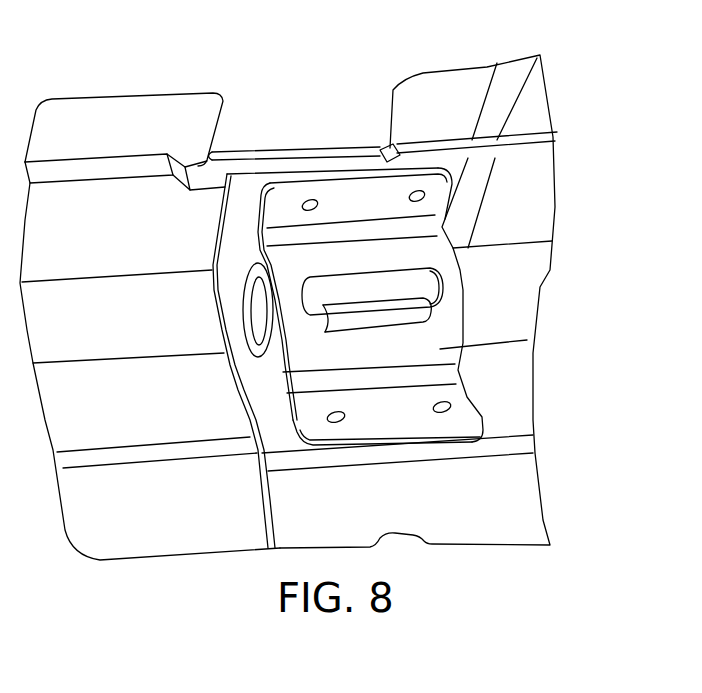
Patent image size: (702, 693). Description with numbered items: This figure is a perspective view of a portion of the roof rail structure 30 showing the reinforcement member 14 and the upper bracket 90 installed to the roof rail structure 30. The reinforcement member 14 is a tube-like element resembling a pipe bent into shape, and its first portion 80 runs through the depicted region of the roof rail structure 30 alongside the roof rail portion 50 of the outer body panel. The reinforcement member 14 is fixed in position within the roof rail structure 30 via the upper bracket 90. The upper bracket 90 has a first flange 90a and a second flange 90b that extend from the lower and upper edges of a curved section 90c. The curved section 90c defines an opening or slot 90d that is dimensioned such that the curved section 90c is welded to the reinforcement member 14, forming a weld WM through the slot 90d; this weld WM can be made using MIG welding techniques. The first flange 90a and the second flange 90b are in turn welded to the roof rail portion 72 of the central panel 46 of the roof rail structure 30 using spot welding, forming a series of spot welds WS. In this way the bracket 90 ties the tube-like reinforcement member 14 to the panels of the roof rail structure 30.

The roof rail portion 50 is at (98, 90).
The roof rail structure 30 is at (196, 55).
The reinforcement member 14 is at (520, 270).
The first portion 80 is at (488, 267).
The roof rail portion 72 is at (383, 155).
The central panel 46 is at (383, 147).
The upper bracket 90 is at (435, 350).
The first flange 90a is at (463, 417).
The second flange 90b is at (437, 187).
The curved section 90c is at (303, 362).
The slot 90d is at (305, 292).
The weld WM is at (403, 313).
The spot welds WS is at (400, 474).